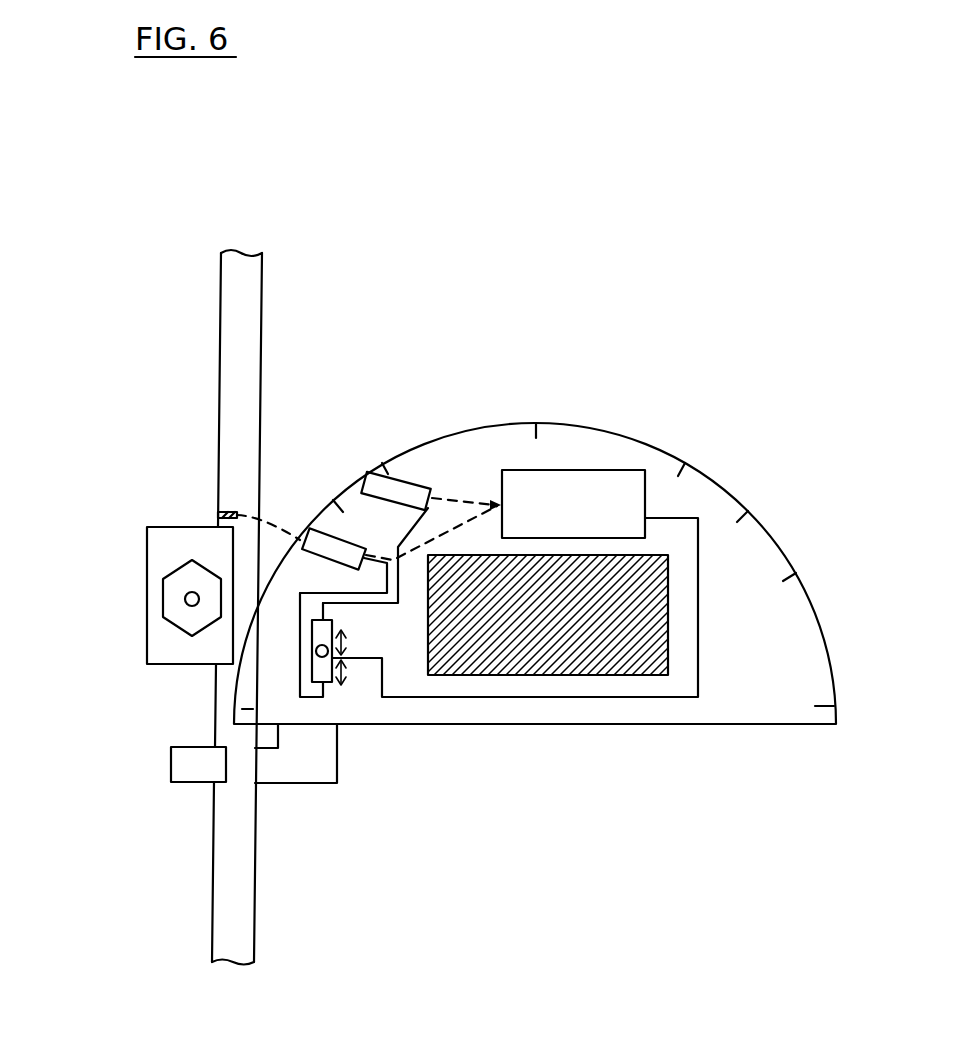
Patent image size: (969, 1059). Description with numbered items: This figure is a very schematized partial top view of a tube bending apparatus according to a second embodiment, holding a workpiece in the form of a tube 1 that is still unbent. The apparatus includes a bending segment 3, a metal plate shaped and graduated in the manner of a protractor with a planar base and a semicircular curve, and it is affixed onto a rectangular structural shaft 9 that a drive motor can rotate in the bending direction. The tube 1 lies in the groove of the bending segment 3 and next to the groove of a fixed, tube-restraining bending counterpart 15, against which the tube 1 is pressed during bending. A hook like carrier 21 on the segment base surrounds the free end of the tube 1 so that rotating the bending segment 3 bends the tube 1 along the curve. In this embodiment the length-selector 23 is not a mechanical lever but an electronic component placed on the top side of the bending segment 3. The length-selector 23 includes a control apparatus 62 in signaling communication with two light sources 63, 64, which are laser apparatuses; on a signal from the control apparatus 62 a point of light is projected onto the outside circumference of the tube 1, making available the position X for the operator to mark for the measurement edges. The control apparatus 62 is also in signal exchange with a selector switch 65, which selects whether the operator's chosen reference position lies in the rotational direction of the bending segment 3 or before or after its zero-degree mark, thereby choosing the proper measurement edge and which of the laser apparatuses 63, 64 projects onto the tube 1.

The workpiece (tube) 1 is at (250, 283).
The bending segment 3 is at (762, 657).
The rectangular structural shaft 9 is at (667, 642).
The bending counterpart 15 is at (170, 652).
The hook like carrier 21 is at (318, 768).
The length-selector 23 is at (690, 582).
The control apparatus 62 is at (549, 519).
The light source (laser apparatus) 63 is at (313, 528).
The light source (laser apparatus) 64 is at (432, 490).
The selector switch 65 is at (326, 684).
The position X is at (210, 514).